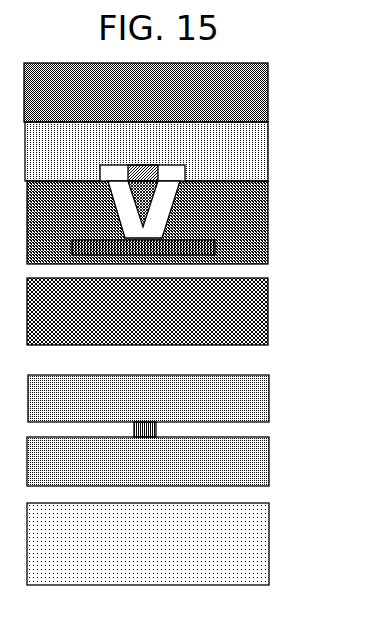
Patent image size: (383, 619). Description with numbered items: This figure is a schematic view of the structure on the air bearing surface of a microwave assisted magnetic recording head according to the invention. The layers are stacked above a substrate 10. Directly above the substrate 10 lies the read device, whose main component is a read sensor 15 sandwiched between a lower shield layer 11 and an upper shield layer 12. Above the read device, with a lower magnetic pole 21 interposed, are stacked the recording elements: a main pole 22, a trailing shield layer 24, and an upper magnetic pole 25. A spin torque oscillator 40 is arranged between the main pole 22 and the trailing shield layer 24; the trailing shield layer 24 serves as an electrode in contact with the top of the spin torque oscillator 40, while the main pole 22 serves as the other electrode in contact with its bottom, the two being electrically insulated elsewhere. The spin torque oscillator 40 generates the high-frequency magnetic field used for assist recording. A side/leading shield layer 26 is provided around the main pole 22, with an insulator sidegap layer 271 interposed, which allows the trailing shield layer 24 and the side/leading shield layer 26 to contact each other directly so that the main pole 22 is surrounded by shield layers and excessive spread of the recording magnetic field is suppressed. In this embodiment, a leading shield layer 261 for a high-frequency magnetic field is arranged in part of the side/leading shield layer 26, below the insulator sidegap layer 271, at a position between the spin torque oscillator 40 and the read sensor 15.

The substrate 10 is at (258, 537).
The lower shield layer 11 is at (260, 458).
The upper shield layer 12 is at (255, 396).
The read sensor 15 is at (156, 425).
The lower magnetic pole 21 is at (255, 313).
The main pole 22 is at (158, 188).
The trailing shield layer 24 is at (258, 133).
The upper magnetic pole 25 is at (262, 109).
The side/leading shield layer 26 is at (255, 237).
The spin torque oscillator 40 is at (153, 165).
The leading shield layer for a high-frequency magnetic field 261 is at (208, 247).
The insulator sidegap layer 271 is at (162, 208).